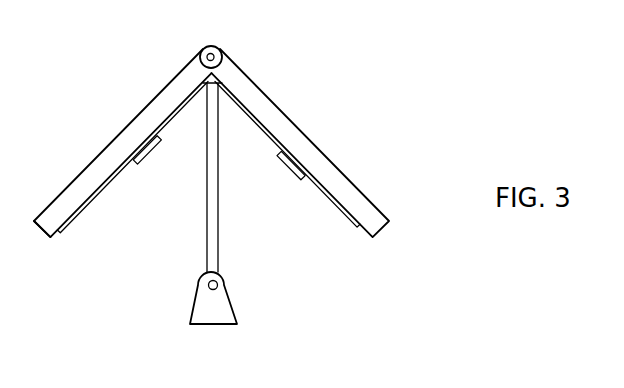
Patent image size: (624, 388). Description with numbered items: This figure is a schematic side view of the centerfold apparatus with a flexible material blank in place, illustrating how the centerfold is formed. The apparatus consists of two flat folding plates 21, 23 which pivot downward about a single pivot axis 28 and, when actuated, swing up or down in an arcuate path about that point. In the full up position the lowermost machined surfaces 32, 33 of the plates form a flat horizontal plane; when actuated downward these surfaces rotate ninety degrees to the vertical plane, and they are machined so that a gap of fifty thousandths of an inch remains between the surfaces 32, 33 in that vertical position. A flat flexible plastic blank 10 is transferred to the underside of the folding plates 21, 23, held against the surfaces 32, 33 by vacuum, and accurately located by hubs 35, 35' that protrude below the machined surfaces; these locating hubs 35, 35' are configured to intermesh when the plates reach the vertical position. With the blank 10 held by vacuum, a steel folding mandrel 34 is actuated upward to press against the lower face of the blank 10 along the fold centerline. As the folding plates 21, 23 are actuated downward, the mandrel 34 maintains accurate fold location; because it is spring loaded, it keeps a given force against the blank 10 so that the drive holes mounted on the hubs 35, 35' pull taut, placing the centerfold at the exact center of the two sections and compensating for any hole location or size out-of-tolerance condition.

The flat flexible plastic blank 10 is at (91, 202).
The folding plate 21 is at (129, 124).
The folding plate 23 is at (298, 128).
The pivot axis 28 is at (220, 51).
The machined surface 32 is at (56, 237).
The machined surface 33 is at (360, 224).
The steel folding mandrel 34 is at (218, 214).
The locating hub 35 is at (144, 174).
The locating hub 35' is at (292, 183).